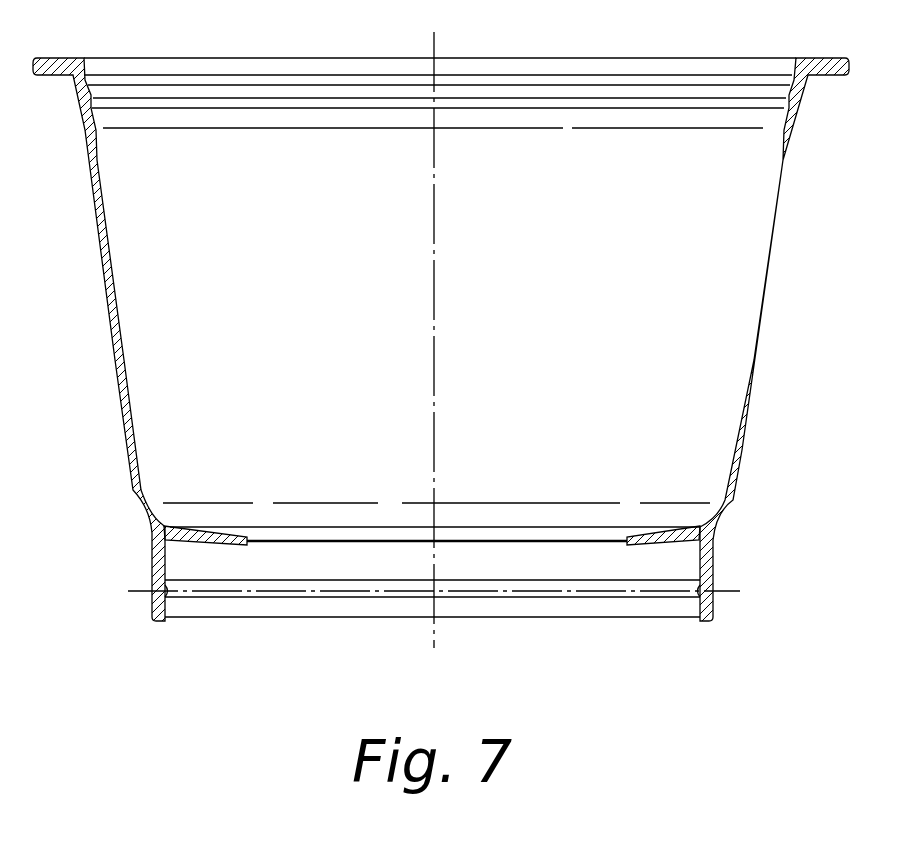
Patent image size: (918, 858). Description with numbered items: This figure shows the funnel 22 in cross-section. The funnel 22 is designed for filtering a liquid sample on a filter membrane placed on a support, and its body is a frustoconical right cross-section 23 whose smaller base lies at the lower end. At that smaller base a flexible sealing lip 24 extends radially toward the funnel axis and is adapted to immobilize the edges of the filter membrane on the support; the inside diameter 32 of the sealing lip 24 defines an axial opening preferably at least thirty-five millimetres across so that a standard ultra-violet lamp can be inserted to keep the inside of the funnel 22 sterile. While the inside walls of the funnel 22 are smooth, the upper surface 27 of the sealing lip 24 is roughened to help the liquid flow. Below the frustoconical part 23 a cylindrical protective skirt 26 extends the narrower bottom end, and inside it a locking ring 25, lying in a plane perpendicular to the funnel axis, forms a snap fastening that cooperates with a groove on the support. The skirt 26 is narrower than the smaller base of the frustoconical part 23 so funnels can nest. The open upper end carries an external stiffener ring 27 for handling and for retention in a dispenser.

The funnel 22 is at (784, 275).
The frustoconical right cross-section 23 is at (101, 262).
The flexible sealing lip 24 is at (232, 541).
The locking ring 25 is at (150, 594).
The cylindrical protective skirt 26 is at (713, 568).
The external stiffener ring 27 is at (52, 57).
The inside diameter of the flexible sealing lip 32 is at (318, 540).